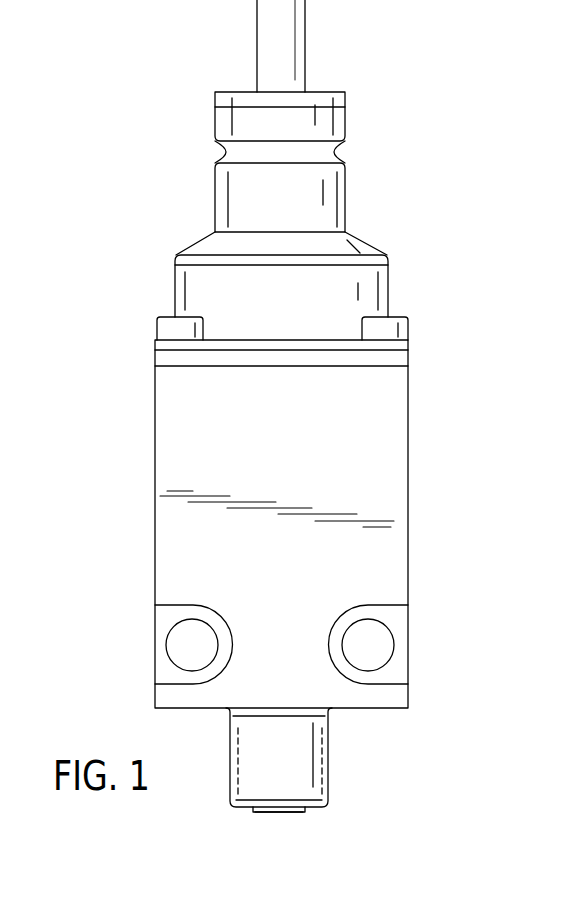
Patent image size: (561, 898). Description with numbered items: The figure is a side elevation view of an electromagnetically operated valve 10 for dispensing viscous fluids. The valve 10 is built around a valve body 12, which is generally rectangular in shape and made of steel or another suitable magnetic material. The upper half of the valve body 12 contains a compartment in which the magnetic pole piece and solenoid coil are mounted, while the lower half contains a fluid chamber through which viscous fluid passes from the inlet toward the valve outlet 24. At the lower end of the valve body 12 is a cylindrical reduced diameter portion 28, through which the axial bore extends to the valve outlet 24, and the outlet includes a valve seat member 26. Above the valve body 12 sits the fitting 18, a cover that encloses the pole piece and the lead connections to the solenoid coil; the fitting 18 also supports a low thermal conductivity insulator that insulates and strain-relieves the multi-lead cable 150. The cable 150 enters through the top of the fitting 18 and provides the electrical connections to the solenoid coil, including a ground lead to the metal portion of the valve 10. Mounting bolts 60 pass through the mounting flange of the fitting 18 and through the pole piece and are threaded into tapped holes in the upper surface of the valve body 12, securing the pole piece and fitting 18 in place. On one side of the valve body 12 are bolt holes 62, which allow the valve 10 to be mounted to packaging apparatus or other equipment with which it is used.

The electromagnetically operated valve 10 is at (451, 223).
The valve body 12 is at (383, 446).
The fitting 18 is at (330, 202).
The valve outlet 24 is at (252, 808).
The valve seat member 26 is at (292, 812).
The cylindrical reduced diameter portion 28 is at (308, 753).
The mounting bolts 60 is at (163, 332).
The bolt holes 62 is at (192, 622).
The multi-lead cable 150 is at (296, 42).